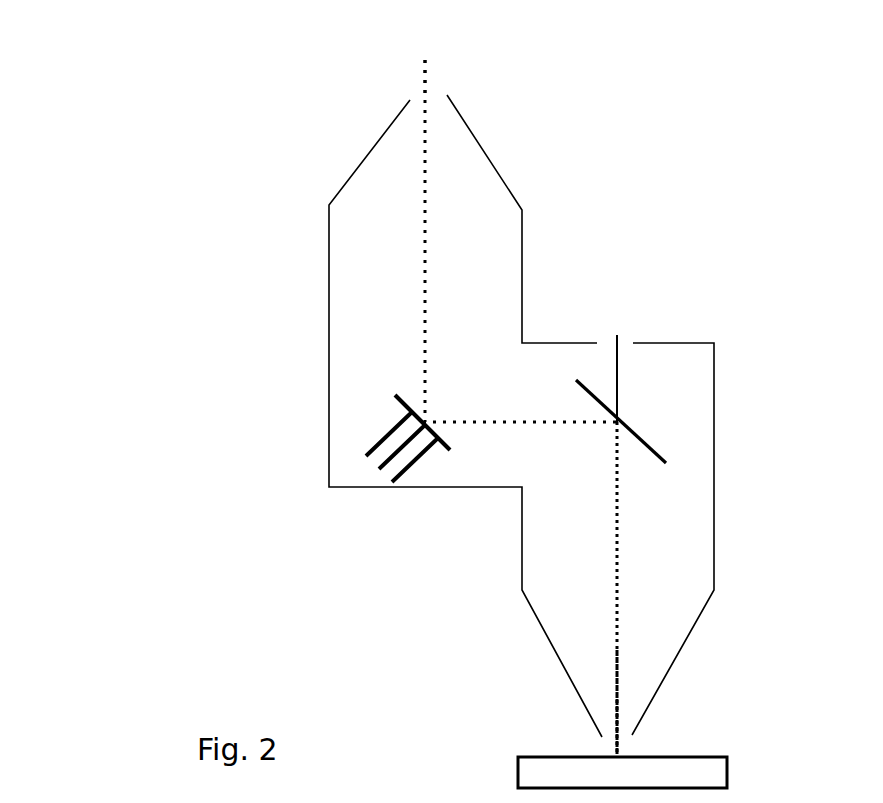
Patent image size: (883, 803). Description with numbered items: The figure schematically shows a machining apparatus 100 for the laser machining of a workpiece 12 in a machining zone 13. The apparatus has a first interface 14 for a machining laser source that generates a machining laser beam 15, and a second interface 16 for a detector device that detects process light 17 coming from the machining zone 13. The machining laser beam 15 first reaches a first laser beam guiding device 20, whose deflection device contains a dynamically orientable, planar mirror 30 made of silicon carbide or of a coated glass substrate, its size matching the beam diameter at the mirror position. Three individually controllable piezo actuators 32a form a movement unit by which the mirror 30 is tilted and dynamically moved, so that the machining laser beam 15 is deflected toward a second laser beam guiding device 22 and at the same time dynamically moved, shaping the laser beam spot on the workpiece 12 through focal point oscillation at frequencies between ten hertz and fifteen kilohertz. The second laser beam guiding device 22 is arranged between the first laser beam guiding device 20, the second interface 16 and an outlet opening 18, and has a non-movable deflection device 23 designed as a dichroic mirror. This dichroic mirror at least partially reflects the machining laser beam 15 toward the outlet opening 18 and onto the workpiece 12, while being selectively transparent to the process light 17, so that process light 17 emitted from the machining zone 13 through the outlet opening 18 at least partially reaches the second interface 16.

The machining apparatus 100 is at (185, 127).
The first interface 14 is at (440, 83).
The machining laser beam 15 is at (437, 80).
The second interface 16 is at (627, 313).
The process light 17 is at (620, 373).
The second laser beam guiding device 22 is at (677, 452).
The non-movable deflection device 23 is at (640, 430).
The first laser beam guiding device 20 is at (341, 426).
The mirror 30 is at (400, 398).
The piezo actuators 32a is at (390, 482).
The outlet opening 18 is at (590, 735).
The machining zone 13 is at (628, 752).
The workpiece 12 is at (727, 772).